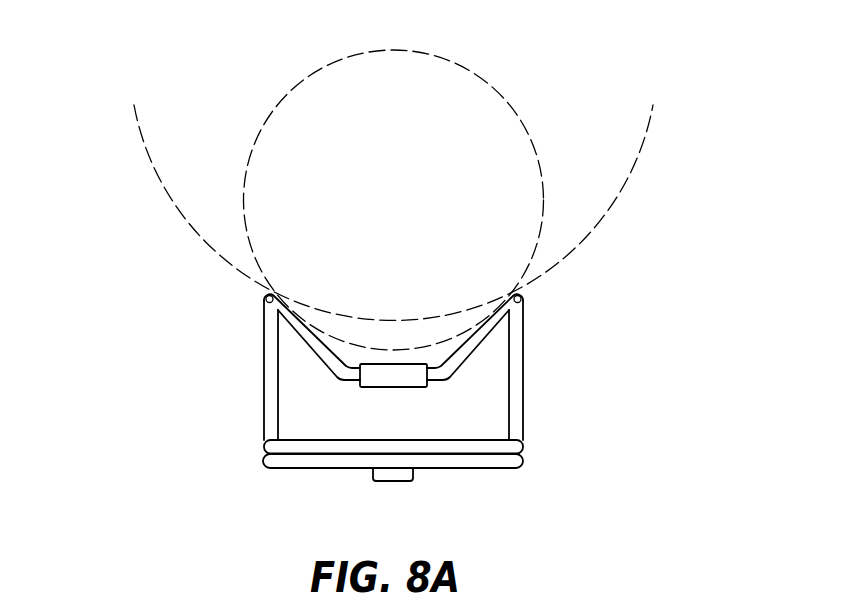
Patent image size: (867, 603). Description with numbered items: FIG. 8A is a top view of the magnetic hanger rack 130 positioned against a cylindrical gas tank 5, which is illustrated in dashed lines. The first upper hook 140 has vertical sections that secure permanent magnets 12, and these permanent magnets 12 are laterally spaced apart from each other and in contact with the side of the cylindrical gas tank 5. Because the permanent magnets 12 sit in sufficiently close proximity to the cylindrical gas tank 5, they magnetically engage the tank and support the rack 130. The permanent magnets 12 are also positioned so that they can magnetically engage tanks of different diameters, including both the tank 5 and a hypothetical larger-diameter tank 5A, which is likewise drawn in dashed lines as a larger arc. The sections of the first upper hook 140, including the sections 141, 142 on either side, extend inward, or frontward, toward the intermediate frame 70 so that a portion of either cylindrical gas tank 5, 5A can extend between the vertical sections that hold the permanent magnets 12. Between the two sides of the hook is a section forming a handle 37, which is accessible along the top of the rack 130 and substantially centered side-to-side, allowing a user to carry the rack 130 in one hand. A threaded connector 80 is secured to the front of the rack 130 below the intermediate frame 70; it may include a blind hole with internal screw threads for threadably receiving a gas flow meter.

The cylindrical gas tank 5 is at (472, 77).
The hypothetical larger tank 5A is at (649, 120).
The rack 130 is at (133, 282).
The permanent magnets 12 is at (265, 298).
The first side wall 141 is at (264, 375).
The second side wall 142 is at (523, 374).
The first upper hook 140 is at (524, 416).
The handle 37 is at (394, 388).
The threaded connector 80 is at (393, 481).
The intermediate frame 70 is at (473, 468).